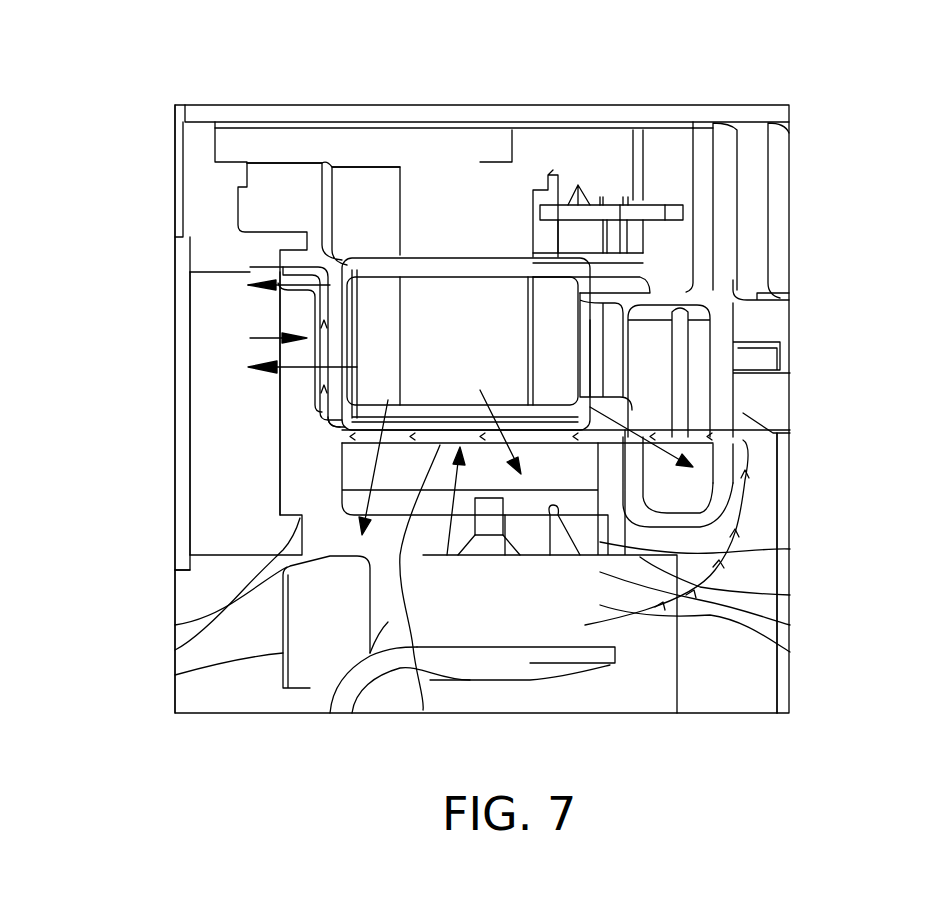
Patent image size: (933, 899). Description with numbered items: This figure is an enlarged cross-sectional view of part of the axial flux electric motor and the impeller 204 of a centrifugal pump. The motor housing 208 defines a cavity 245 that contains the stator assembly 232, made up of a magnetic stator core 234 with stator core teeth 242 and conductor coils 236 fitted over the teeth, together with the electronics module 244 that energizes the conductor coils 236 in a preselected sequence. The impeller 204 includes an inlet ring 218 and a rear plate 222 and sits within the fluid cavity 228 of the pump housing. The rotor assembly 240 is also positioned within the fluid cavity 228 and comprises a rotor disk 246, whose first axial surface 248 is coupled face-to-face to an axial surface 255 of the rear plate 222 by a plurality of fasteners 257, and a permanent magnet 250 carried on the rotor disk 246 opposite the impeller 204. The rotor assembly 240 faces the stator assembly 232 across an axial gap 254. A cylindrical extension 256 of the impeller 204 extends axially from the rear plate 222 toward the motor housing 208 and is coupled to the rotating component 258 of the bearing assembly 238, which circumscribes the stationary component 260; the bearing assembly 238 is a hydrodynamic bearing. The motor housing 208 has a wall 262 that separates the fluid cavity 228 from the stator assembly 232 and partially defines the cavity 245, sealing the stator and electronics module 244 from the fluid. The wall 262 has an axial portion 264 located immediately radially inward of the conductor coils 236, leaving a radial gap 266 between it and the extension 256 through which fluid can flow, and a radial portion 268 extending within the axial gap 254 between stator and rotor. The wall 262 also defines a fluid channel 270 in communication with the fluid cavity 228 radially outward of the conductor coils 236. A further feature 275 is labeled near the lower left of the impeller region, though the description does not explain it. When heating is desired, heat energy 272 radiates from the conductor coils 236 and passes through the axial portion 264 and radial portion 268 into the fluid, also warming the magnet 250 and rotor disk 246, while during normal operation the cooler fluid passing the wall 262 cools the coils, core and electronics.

The impeller 204 is at (365, 695).
The motor housing 208 is at (765, 202).
The inlet ring 218 is at (487, 682).
The rear plate 222 is at (790, 597).
The fluid cavity 228 is at (720, 705).
The stator assembly 232 is at (580, 237).
The magnetic stator core 234 is at (362, 200).
The conductor coils 236 is at (460, 307).
The bearing assembly 238 is at (165, 236).
The rotor assembly 240 is at (580, 503).
The stator core teeth 242 is at (451, 207).
The electronics module 244 is at (673, 207).
The cavity 245 is at (665, 140).
The rotor disk 246 is at (790, 549).
The first axial surface 248 is at (790, 625).
The permanent magnet 250 is at (630, 483).
The axial gap 254 is at (447, 555).
The axial surface 255 is at (790, 652).
The cylindrical extension 256 is at (292, 389).
The fasteners 257 is at (493, 555).
The rotating component 258 is at (205, 512).
The stationary component 260 is at (183, 553).
The wall 262 is at (330, 417).
The axial portion 264 is at (333, 318).
The radial gap 266 is at (250, 338).
The radial portion 268 is at (423, 710).
The fluid channel 270 is at (718, 343).
The heat energy 272 is at (250, 267).
The curved wall 275 is at (235, 598).